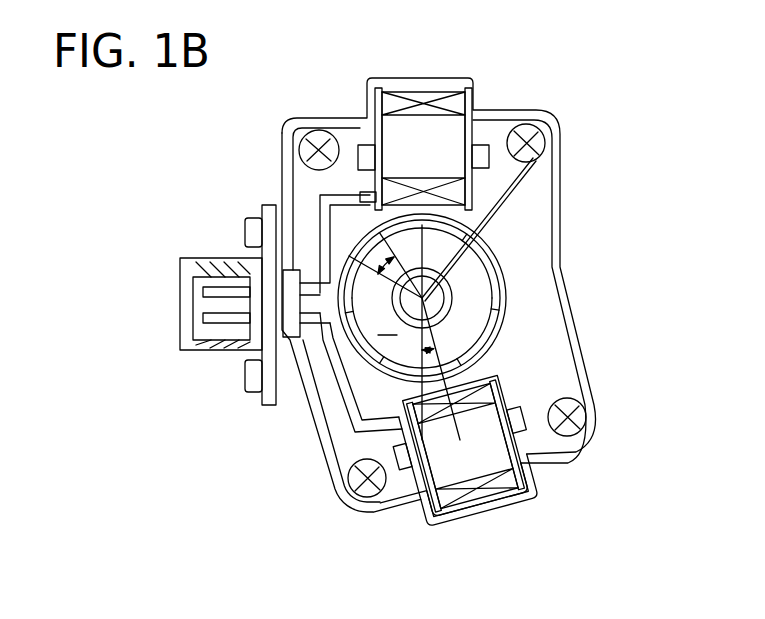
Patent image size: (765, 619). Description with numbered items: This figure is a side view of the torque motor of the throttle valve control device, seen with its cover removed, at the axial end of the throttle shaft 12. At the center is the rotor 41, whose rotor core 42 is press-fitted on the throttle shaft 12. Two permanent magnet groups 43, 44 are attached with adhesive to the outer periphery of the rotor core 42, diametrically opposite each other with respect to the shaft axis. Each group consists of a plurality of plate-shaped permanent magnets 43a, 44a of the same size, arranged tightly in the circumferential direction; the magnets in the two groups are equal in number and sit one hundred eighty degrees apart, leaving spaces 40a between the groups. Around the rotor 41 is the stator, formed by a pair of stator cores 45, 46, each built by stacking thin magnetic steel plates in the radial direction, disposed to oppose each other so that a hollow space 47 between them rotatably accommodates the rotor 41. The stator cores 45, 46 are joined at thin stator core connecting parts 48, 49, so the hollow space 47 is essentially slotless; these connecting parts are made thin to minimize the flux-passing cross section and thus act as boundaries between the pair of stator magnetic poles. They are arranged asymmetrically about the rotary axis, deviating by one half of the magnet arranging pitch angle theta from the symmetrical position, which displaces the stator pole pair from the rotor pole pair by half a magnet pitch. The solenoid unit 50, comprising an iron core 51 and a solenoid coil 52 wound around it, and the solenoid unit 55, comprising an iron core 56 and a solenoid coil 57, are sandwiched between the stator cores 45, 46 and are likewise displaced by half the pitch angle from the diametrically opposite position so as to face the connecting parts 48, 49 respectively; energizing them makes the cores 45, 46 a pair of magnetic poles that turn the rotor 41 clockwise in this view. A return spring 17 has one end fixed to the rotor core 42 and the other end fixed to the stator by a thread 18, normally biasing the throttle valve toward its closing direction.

The throttle shaft 12 is at (444, 302).
The return spring 17 is at (502, 198).
The thread 18 is at (553, 132).
The spaces 40a is at (347, 326).
The rotor 41 is at (501, 279).
The rotor core 42 is at (487, 315).
The permanent magnet group 43 is at (362, 242).
The permanent magnets 43a is at (497, 237).
The permanent magnet group 44 is at (371, 369).
The permanent magnets 44a is at (488, 350).
The stator core 45 is at (400, 480).
The stator core 46 is at (560, 383).
The hollow space 47 is at (356, 346).
The stator core connecting part 48 is at (422, 225).
The stator core connecting part 49 is at (463, 437).
The solenoid unit 50 is at (480, 137).
The iron core 51 is at (448, 137).
The solenoid coil 52 is at (460, 103).
The solenoid unit 55 is at (531, 444).
The iron core 56 is at (497, 462).
The solenoid coil 57 is at (523, 477).